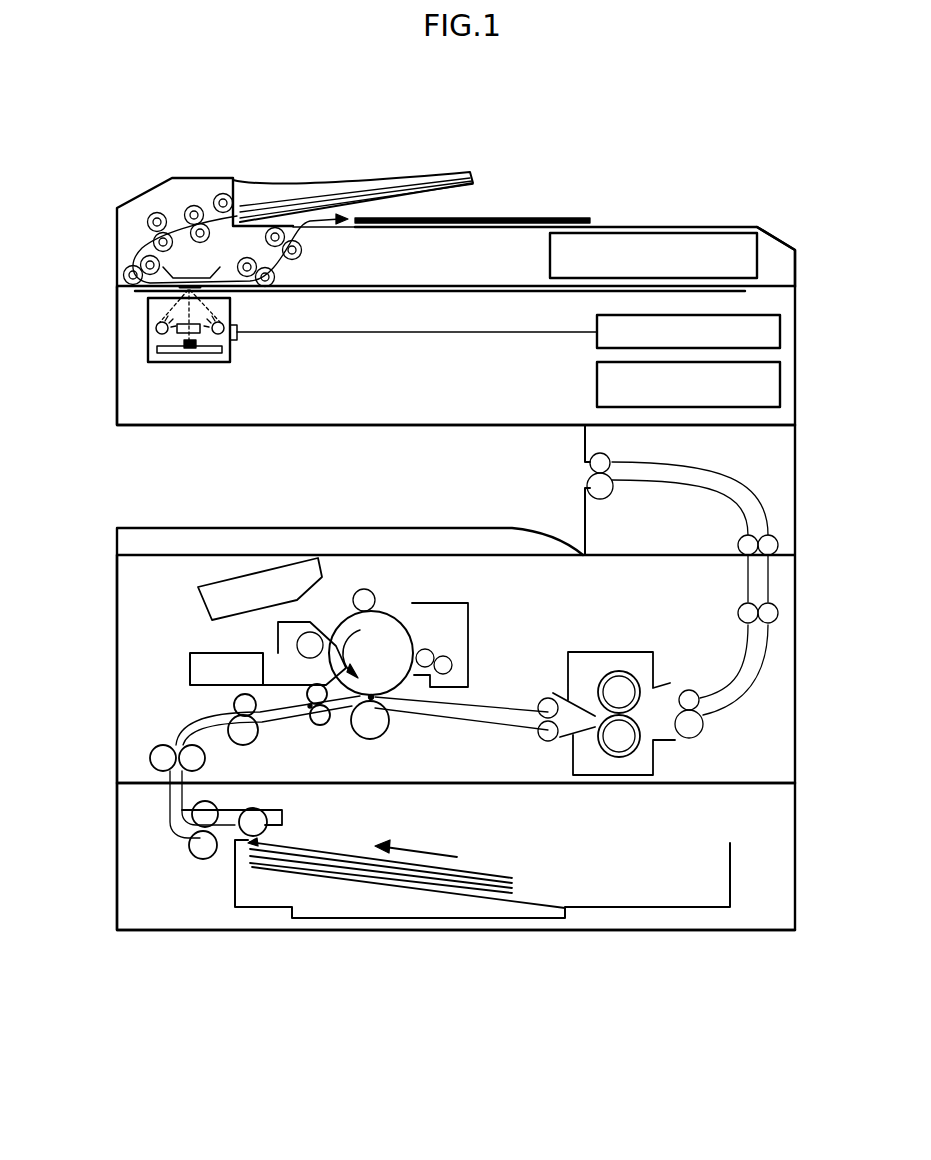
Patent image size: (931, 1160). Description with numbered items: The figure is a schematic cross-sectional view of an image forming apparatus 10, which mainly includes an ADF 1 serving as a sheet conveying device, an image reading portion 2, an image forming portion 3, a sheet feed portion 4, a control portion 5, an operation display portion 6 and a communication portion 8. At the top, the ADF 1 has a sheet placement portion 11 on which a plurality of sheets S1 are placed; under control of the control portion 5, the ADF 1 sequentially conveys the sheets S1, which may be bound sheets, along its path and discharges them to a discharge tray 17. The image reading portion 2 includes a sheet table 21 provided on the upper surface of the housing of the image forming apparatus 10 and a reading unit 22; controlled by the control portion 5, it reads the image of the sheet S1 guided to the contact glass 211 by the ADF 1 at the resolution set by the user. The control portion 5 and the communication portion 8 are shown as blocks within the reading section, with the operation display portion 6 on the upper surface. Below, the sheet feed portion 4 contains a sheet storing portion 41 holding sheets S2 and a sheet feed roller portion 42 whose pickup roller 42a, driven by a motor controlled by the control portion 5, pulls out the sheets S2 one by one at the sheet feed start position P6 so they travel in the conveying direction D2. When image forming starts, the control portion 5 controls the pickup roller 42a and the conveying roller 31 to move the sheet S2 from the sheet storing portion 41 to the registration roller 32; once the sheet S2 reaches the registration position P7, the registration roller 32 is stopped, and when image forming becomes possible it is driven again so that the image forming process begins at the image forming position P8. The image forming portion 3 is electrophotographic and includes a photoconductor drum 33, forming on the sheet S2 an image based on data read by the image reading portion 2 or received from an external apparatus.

The image forming apparatus 10 is at (101, 141).
The ADF 1 is at (115, 229).
The sheet placement portion 11 is at (308, 184).
The sheet S1 is at (353, 182).
The discharge tray 17 is at (642, 227).
The operation display portion 6 is at (684, 233).
The sheet table 21 is at (767, 279).
The contact glass 211 is at (430, 291).
The image reading portion 2 is at (115, 354).
The reading unit 22 is at (185, 374).
The control portion 5 is at (782, 332).
The communication portion 8 is at (782, 388).
The image forming portion 3 is at (115, 660).
The photoconductor drum 33 is at (398, 618).
The conveying roller 31 is at (160, 745).
The registration position P7 is at (310, 706).
The registration roller 32 is at (320, 727).
The image forming position P8 is at (373, 700).
The sheet feed portion 4 is at (115, 867).
The pickup roller 42a is at (255, 808).
The sheet feed roller portion 42 is at (337, 809).
The sheet feed start position P6 is at (255, 842).
The conveying direction D2 is at (416, 839).
The sheet S2 is at (487, 866).
The sheet storing portion 41 is at (432, 920).